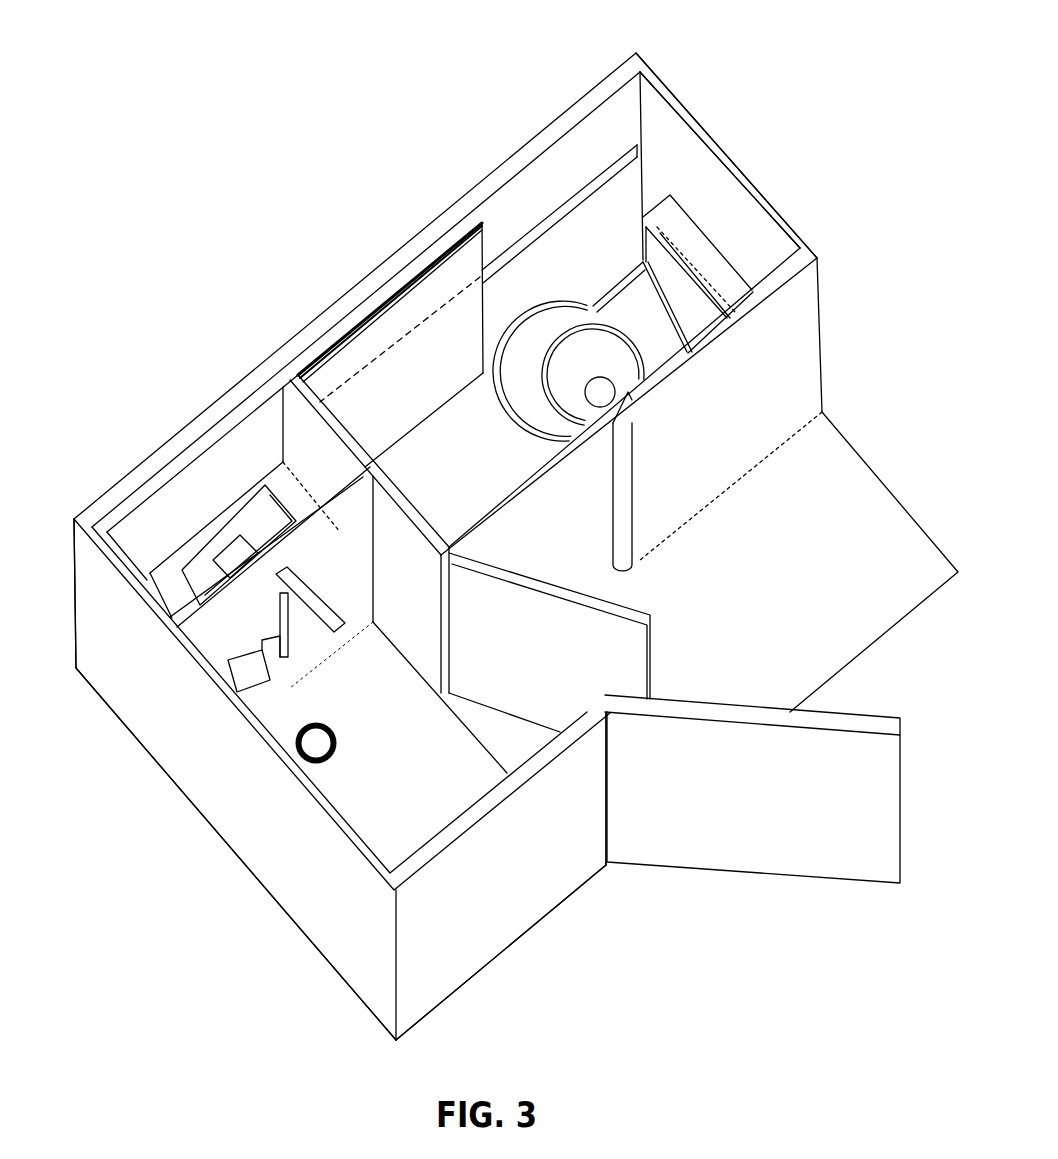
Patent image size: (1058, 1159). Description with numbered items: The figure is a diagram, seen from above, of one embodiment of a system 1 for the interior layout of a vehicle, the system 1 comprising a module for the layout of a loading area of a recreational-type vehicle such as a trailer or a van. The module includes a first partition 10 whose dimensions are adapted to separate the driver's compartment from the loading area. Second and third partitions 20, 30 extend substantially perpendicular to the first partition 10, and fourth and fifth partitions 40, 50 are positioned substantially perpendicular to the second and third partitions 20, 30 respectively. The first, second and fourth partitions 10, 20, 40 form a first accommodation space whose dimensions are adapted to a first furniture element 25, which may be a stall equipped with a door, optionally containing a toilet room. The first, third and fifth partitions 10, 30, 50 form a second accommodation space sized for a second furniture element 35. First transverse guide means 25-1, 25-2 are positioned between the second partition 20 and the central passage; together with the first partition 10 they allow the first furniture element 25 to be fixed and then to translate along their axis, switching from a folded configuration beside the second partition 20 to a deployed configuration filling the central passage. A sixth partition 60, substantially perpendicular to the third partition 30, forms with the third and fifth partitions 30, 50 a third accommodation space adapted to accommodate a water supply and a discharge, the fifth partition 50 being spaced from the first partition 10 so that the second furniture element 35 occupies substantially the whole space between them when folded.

The system for the interior layout of a vehicle 1 is at (238, 98).
The first partition 10 is at (505, 205).
The second partition 20 is at (722, 148).
The first furniture element 25 is at (364, 335).
The first transverse guide means 25-1 is at (612, 177).
The first transverse guide means 25-2 is at (445, 305).
The third partition 30 is at (82, 667).
The second furniture element 35 is at (232, 450).
The fourth partition 40 is at (806, 376).
The fifth partition 50 is at (208, 640).
The sixth partition 60 is at (448, 935).